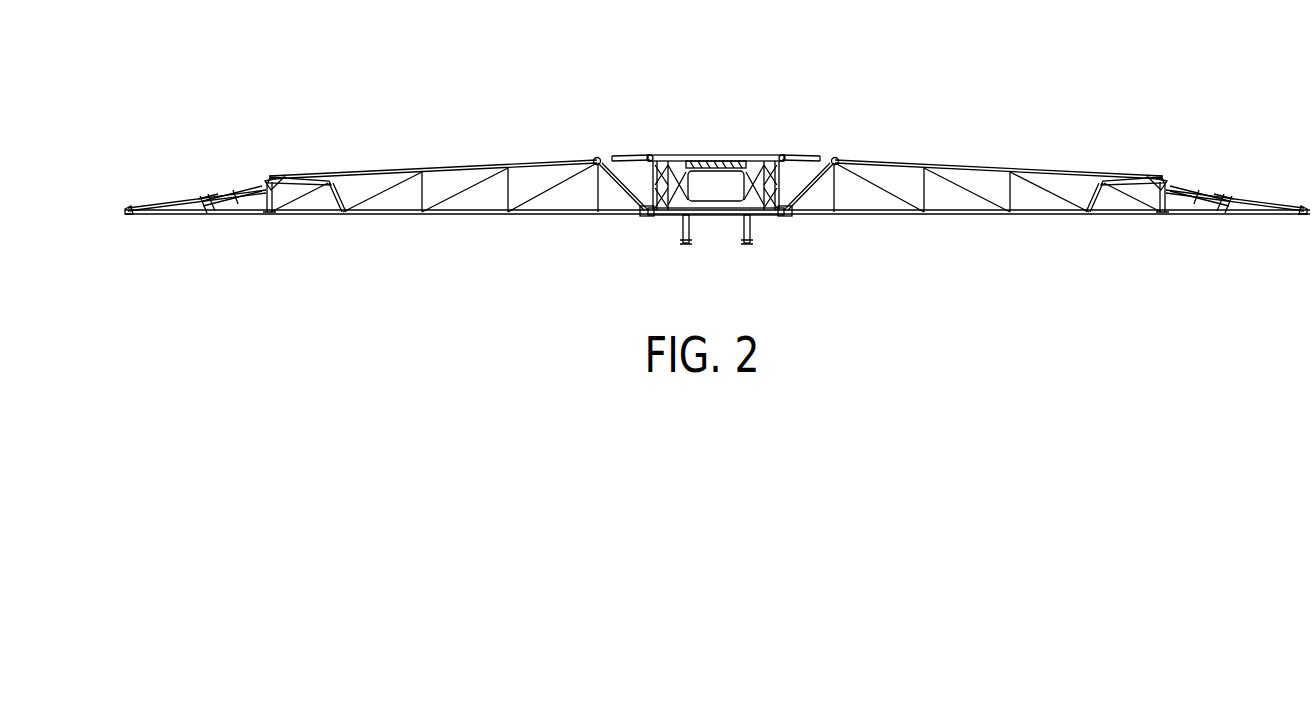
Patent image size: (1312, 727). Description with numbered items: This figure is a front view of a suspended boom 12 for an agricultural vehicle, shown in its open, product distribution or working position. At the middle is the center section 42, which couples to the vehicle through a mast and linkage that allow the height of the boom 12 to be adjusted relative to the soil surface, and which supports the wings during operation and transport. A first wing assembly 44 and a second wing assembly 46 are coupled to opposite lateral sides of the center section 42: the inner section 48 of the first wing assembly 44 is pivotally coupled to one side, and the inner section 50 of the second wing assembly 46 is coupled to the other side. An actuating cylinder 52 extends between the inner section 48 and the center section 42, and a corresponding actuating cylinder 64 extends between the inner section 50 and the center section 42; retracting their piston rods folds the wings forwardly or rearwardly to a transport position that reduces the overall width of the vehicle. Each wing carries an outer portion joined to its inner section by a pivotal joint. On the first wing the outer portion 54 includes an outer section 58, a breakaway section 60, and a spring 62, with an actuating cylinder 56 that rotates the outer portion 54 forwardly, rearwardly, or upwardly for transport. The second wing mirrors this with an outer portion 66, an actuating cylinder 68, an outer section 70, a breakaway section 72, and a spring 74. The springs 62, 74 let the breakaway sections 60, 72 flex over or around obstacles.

The suspended boom 12 is at (338, 44).
The center section 42 is at (718, 157).
The first wing assembly 44 is at (453, 162).
The second wing assembly 46 is at (978, 162).
The inner section 48 is at (455, 215).
The inner section 50 is at (942, 213).
The actuating cylinder 52 is at (677, 220).
The outer portion 54 is at (123, 220).
The actuating cylinder 56 is at (312, 180).
The outer section 58 is at (247, 190).
The breakaway section 60 is at (163, 205).
The spring 62 is at (232, 190).
The actuating cylinder 64 is at (757, 220).
The outer portion 66 is at (1160, 220).
The actuating cylinder 68 is at (1122, 182).
The outer section 70 is at (1187, 186).
The breakaway section 72 is at (1280, 204).
The spring 74 is at (1203, 190).